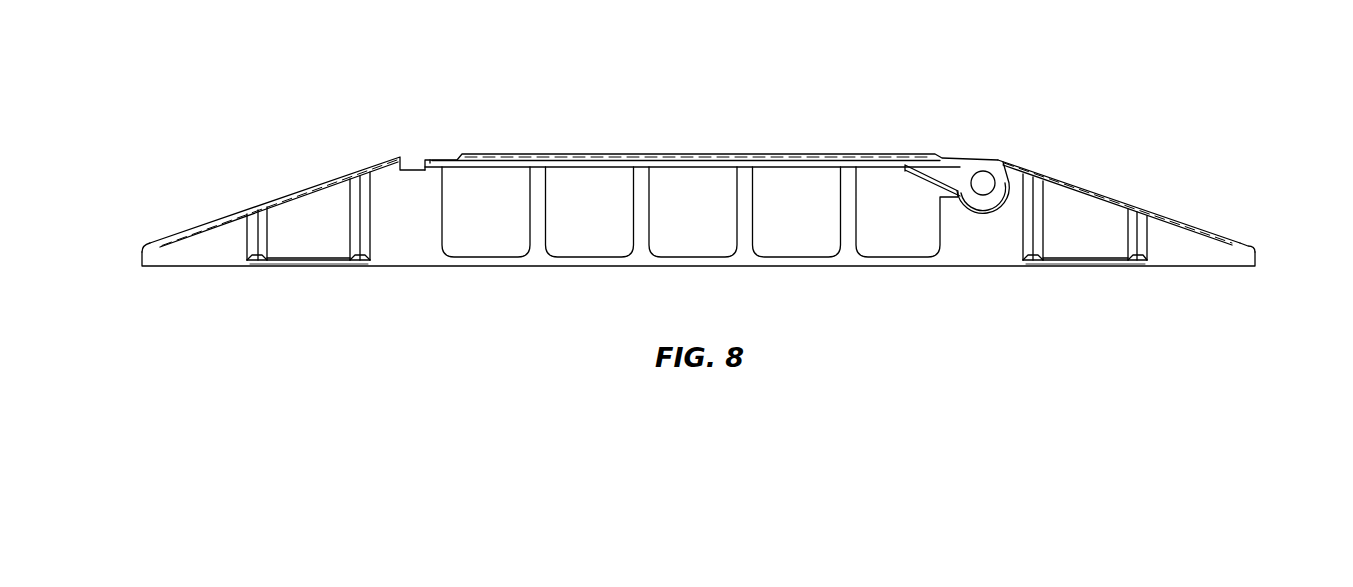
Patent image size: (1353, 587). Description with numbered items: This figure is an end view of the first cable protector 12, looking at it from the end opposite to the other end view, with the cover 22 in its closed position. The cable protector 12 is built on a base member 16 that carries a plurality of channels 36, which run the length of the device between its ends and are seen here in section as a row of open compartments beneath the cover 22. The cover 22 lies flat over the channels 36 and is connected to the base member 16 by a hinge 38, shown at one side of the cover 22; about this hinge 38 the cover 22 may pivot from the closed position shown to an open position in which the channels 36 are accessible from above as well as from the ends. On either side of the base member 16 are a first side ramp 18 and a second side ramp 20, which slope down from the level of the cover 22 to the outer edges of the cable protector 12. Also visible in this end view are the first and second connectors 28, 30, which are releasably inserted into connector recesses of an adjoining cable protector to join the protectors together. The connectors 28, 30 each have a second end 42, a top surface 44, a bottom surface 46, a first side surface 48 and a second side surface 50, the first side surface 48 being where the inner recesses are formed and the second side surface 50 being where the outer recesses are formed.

The first cable protector 12 is at (549, 91).
The base member 16 is at (522, 290).
The first side ramp 18 is at (157, 242).
The second side ramp 20 is at (1257, 258).
The cover 22 is at (773, 154).
The first connector 28 is at (290, 265).
The second connector 30 is at (1118, 270).
The channels 36 is at (717, 235).
The hinge 38 is at (982, 170).
The second end 42 is at (335, 245).
The top surface 44 is at (318, 178).
The bottom surface 46 is at (308, 267).
The first side surface 48 is at (362, 215).
The second side surface 50 is at (257, 230).